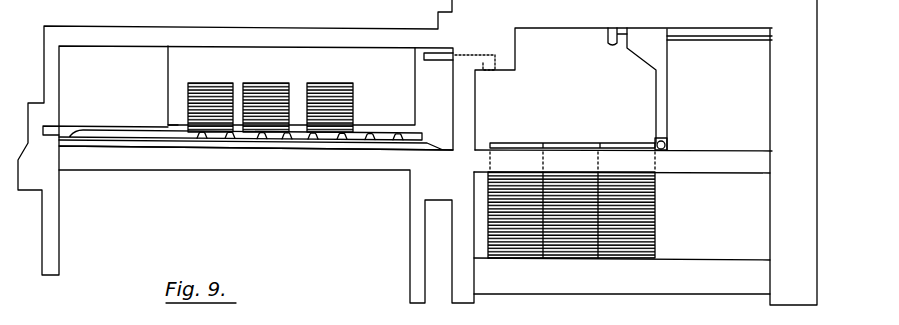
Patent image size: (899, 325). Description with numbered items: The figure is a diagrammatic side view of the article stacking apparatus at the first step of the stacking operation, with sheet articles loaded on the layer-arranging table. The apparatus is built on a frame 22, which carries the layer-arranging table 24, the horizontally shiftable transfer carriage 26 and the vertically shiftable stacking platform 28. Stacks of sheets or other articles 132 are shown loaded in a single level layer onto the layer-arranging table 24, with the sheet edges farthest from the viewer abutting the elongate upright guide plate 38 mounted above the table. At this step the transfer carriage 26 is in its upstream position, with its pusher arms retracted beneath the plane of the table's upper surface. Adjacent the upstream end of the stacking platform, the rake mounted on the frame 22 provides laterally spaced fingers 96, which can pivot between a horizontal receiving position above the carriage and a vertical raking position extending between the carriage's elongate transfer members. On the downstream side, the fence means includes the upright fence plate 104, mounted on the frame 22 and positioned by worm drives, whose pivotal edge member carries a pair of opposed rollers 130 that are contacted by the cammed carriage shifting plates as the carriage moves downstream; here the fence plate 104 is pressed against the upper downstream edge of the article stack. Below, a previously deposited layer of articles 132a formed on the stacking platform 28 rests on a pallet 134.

The frame 22 is at (422, 190).
The layer-arranging table 24 is at (176, 116).
The transfer carriage 26 is at (393, 120).
The stacking platform 28 is at (722, 225).
The guide plate 38 is at (201, 70).
The rake fingers 96 is at (447, 63).
The fence plate 104 is at (668, 97).
The rollers 130 is at (665, 147).
The articles 132 is at (327, 86).
The previously deposited layer of articles 132a is at (570, 236).
The pallet 134 is at (655, 259).